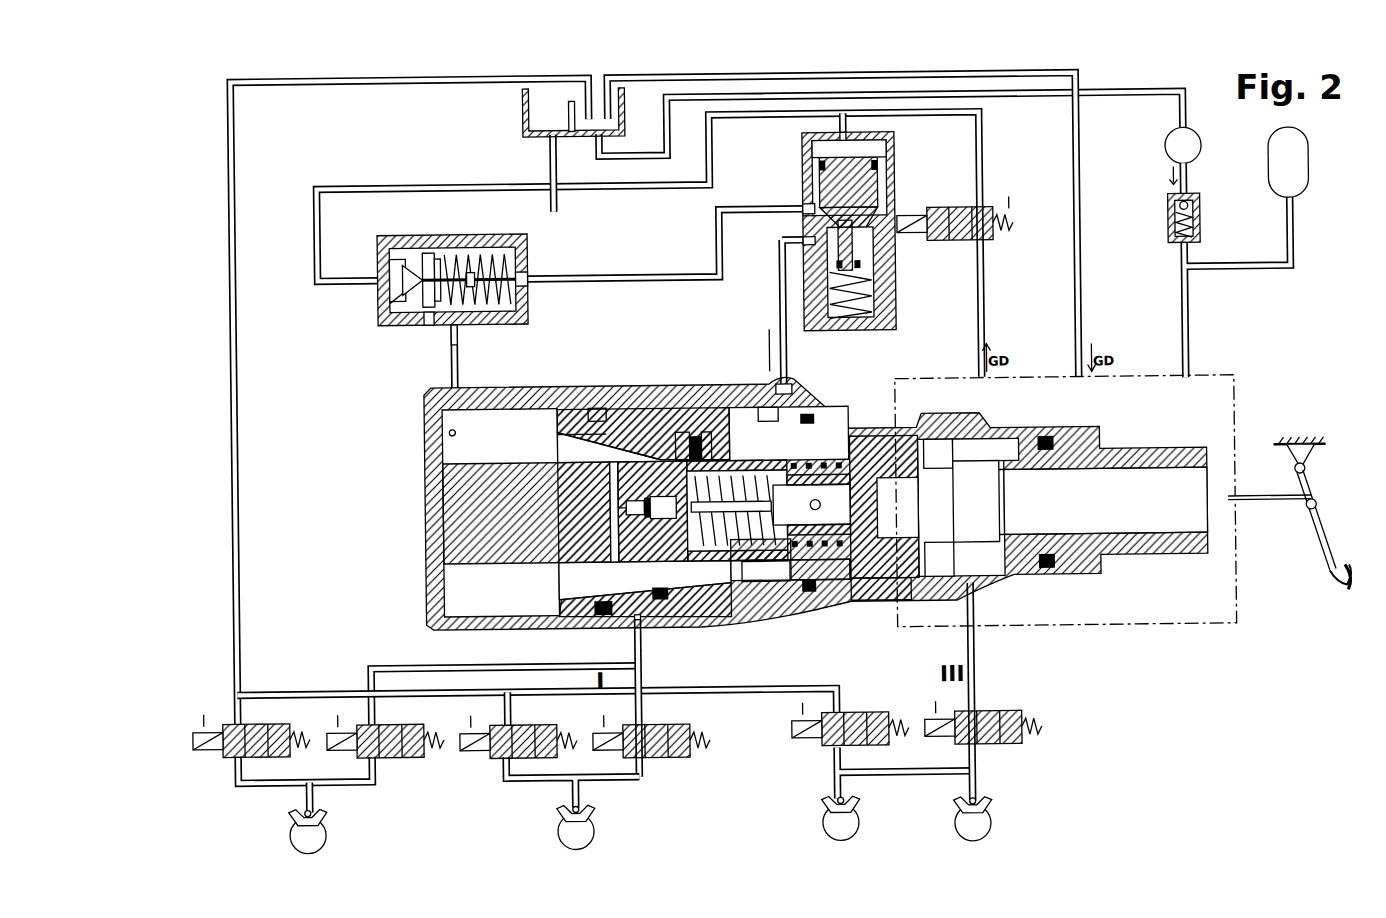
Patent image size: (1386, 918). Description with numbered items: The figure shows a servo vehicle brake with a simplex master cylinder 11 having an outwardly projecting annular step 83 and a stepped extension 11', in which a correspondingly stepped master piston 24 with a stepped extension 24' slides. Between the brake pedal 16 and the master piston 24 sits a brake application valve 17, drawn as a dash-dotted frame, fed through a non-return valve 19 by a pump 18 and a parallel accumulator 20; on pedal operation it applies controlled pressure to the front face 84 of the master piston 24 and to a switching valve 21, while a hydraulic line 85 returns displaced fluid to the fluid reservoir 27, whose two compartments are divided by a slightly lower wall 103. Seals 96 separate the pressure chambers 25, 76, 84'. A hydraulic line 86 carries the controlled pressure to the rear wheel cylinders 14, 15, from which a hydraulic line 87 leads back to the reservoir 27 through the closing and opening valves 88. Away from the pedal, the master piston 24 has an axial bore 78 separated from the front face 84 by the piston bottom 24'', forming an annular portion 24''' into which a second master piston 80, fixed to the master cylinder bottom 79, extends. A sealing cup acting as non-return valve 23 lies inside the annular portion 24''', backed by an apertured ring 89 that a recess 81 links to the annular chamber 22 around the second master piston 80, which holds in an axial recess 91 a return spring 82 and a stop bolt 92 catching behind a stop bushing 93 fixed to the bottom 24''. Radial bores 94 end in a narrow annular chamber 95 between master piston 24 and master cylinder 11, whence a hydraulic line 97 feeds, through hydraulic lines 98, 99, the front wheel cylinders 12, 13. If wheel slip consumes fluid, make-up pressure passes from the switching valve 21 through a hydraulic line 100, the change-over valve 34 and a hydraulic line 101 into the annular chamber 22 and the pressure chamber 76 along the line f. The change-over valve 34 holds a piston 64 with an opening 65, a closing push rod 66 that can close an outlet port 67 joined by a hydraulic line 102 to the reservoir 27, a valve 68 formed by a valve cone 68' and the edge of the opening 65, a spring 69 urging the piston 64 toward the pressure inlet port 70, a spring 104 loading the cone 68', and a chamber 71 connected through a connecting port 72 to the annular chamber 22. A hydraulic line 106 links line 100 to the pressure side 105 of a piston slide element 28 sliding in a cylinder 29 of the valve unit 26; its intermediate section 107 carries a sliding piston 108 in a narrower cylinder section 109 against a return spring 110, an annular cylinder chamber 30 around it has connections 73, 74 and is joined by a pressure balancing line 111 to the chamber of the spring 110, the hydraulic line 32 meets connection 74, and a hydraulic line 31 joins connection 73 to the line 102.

The master cylinder 11 is at (815, 480).
The stepped extension 11' is at (762, 605).
The front-axle wheel cylinder 12 is at (288, 812).
The front-axle wheel cylinder 13 is at (556, 811).
The rear-axle wheel cylinder 14 is at (820, 806).
The rear-axle wheel cylinder 15 is at (952, 808).
The brake pedal 16 is at (1326, 576).
The brake application valve 17 is at (1210, 390).
The pump 18 is at (1168, 150).
The non-return valve 19 is at (1170, 228).
The accumulator 20 is at (1280, 165).
The switching valve 21 is at (962, 210).
The annular chamber 22 is at (565, 408).
The non-return valve 23 is at (712, 476).
The master piston 24 is at (831, 621).
The stepped extension 24' is at (821, 624).
The piston bottom 24'' is at (881, 621).
The annular portion 24''' is at (645, 630).
The pressure chamber 25 is at (790, 395).
The control valve 26 is at (805, 146).
The fluid reservoir 27 is at (526, 128).
The piston slide element 28 is at (822, 165).
The cylinder 29 is at (822, 168).
The annular cylinder chamber 30 is at (830, 215).
The hydraulic line 31 is at (638, 276).
The hydraulic line 32 is at (780, 325).
The change-over valve 34 is at (520, 238).
The piston 64 is at (428, 250).
The central opening 65 is at (440, 256).
The closing push rod 66 is at (470, 252).
The outlet port 67 is at (528, 272).
The valve 68 is at (376, 289).
The valve cone 68' is at (364, 318).
The spring 69 is at (500, 305).
The pressure inlet port 70 is at (380, 277).
The chamber 71 is at (472, 305).
The connecting port 72 is at (453, 322).
The connection 73 is at (805, 208).
The connection 74 is at (808, 250).
The pressure chamber 76 is at (866, 450).
The cylindrical axial bore 78 is at (850, 518).
The master cylinder bottom 79 is at (448, 430).
The second master piston 80 is at (470, 512).
The recess 81 is at (597, 407).
The return spring 82 is at (705, 461).
The annular step 83 is at (856, 438).
The front face 84 is at (971, 477).
The pressure chamber 84' is at (1080, 464).
The hydraulic line 85 is at (1076, 300).
The hydraulic line 86 is at (972, 698).
The hydraulic line 87 is at (752, 694).
The solenoid valve 88 is at (212, 758).
The apertured ring 89 is at (690, 461).
The axial recess 91 is at (768, 470).
The axial stop bolt 92 is at (770, 340).
The stop bushing 93 is at (845, 462).
The radial bores 94 is at (752, 600).
The annular chamber 95 is at (678, 600).
The seals 96 is at (592, 640).
The hydraulic line 97 is at (633, 648).
The hydraulic line 98 is at (410, 665).
The hydraulic line 99 is at (640, 690).
The hydraulic line 100 is at (355, 185).
The hydraulic line 101 is at (450, 370).
The hydraulic line 102 is at (552, 163).
The wall 103 is at (570, 110).
The spring 104 is at (428, 322).
The pressure side 105 is at (880, 150).
The hydraulic line 106 is at (850, 134).
The intermediate section 107 is at (858, 252).
The sliding piston 108 is at (860, 272).
The cylinder section 109 is at (870, 300).
The return spring 110 is at (832, 300).
The pressure balancing line 111 is at (810, 228).
The line f is at (678, 432).